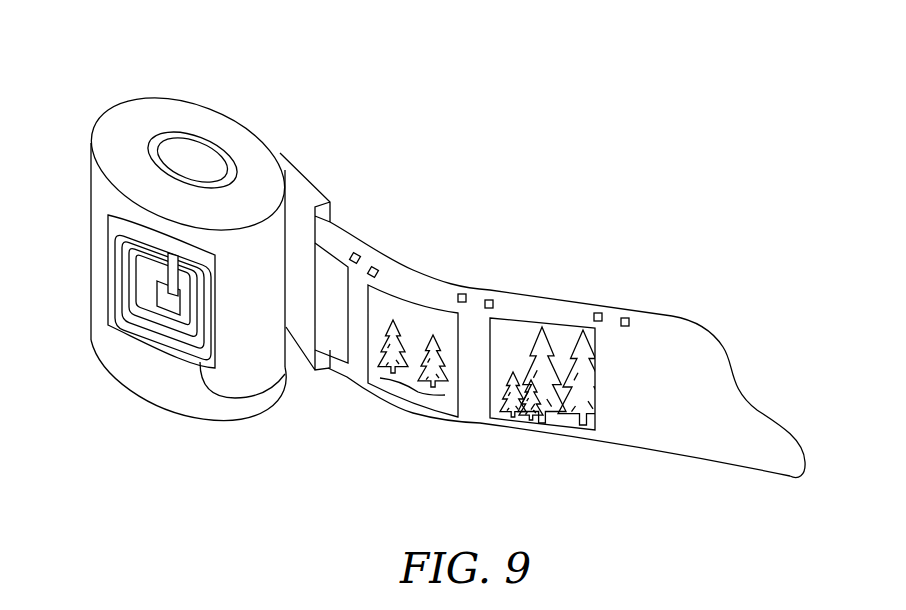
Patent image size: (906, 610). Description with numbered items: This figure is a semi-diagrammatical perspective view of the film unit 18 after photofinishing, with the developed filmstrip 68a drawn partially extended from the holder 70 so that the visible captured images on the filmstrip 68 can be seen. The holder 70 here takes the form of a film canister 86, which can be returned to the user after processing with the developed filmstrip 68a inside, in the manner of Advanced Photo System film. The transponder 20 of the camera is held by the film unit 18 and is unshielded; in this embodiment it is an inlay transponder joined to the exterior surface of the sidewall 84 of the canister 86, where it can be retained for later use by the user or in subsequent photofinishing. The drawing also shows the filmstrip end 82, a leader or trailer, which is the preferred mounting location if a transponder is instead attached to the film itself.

The film unit 18 is at (443, 140).
The transponder 20 is at (253, 400).
The filmstrip 68 is at (453, 281).
The developed filmstrip 68a is at (544, 293).
The holder 70 is at (233, 88).
The filmstrip end 82 is at (672, 317).
The sidewall 84 is at (133, 378).
The film canister 86 is at (317, 185).